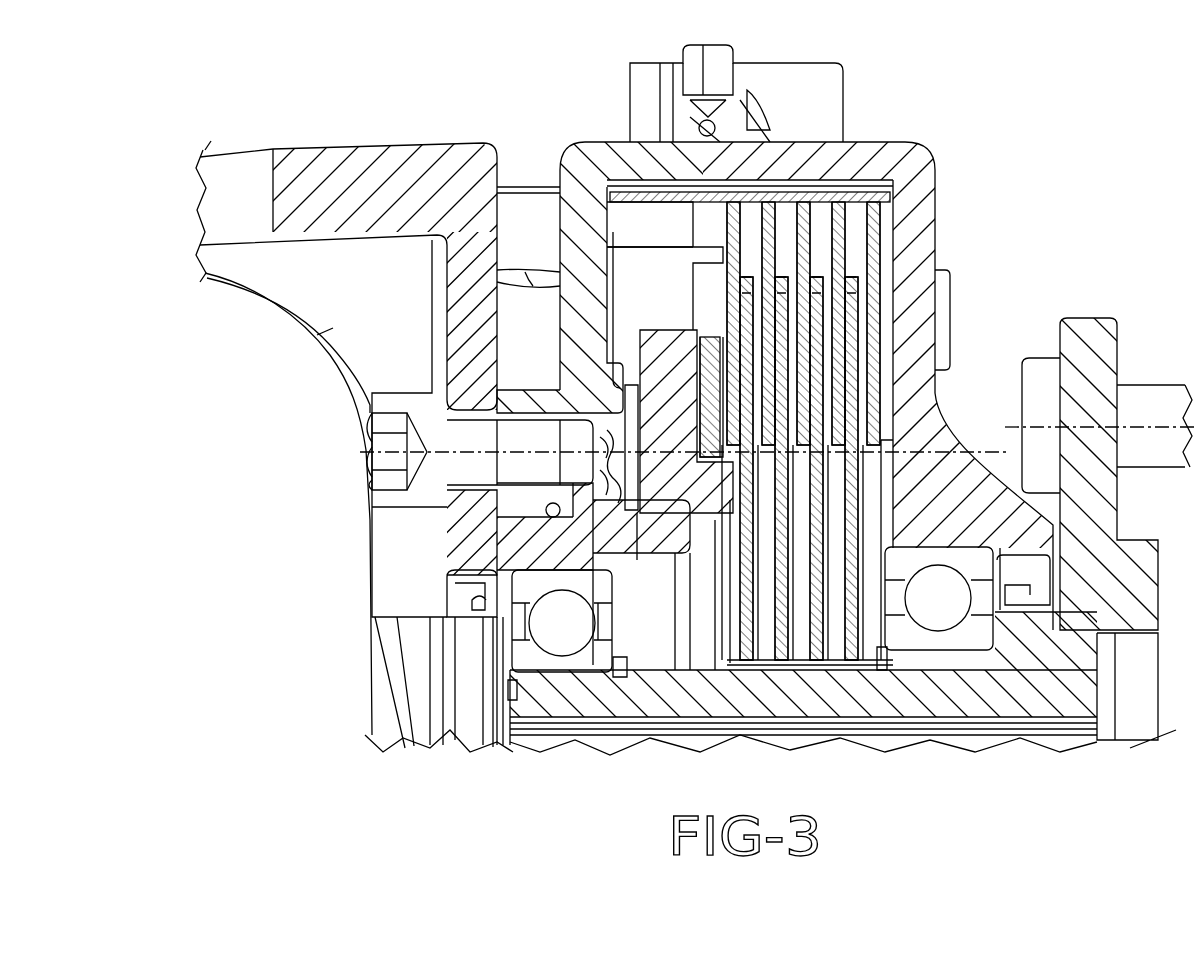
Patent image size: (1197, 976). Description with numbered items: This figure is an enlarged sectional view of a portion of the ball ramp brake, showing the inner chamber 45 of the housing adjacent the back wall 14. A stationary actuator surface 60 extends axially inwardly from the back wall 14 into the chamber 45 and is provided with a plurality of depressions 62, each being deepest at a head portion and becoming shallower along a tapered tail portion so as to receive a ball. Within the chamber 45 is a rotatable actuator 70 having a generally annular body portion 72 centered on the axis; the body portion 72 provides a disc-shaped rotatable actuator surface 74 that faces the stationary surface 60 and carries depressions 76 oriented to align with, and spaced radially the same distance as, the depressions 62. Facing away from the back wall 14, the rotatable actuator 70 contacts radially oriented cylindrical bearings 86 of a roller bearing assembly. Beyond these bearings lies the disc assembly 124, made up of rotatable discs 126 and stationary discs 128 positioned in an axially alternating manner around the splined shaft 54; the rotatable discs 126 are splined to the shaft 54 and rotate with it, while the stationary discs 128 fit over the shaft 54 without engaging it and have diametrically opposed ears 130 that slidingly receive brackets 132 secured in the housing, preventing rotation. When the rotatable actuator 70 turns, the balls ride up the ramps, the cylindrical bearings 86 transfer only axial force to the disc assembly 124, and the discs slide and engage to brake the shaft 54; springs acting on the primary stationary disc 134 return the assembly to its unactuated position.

The back wall 14 is at (570, 223).
The inner chamber 45 is at (585, 185).
The splined shaft 54 is at (980, 688).
The stationary actuator surface 60 is at (613, 388).
The depressions 62 is at (660, 470).
The rotatable actuator 70 is at (656, 270).
The body portion 72 is at (662, 340).
The rotatable actuator surface 74 is at (690, 505).
The depressions 76 is at (642, 330).
The cylindrical bearings 86 is at (668, 335).
The disc assembly 124 is at (907, 212).
The rotatable discs 126 is at (850, 283).
The stationary discs 128 is at (877, 390).
The ears 130 is at (830, 200).
The bracket 132 is at (650, 256).
The primary stationary disc 134 is at (713, 238).